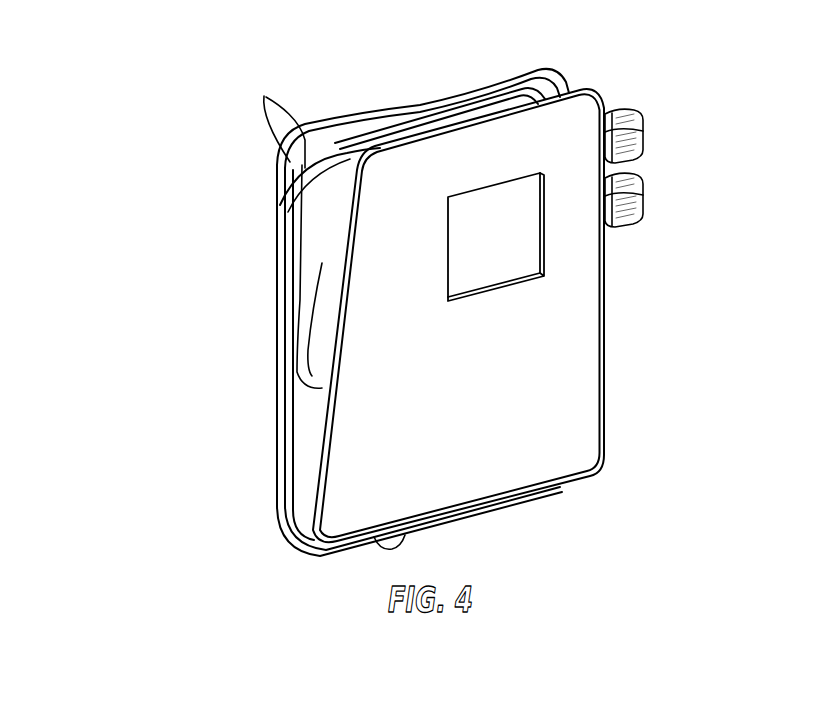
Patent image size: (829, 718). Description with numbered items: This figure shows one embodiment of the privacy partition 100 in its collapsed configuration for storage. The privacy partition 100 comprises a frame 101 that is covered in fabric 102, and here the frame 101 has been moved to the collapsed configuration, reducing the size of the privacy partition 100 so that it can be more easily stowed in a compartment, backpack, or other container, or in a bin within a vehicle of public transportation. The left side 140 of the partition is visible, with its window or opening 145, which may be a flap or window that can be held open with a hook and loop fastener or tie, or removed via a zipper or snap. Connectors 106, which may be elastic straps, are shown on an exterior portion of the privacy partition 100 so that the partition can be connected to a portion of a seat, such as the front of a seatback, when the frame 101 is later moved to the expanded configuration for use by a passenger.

The privacy partition 100 is at (192, 114).
The frame 101 is at (273, 120).
The fabric 102 is at (337, 133).
The connector 106 is at (655, 130).
The left side 140 is at (564, 380).
The window or opening 145 is at (512, 236).